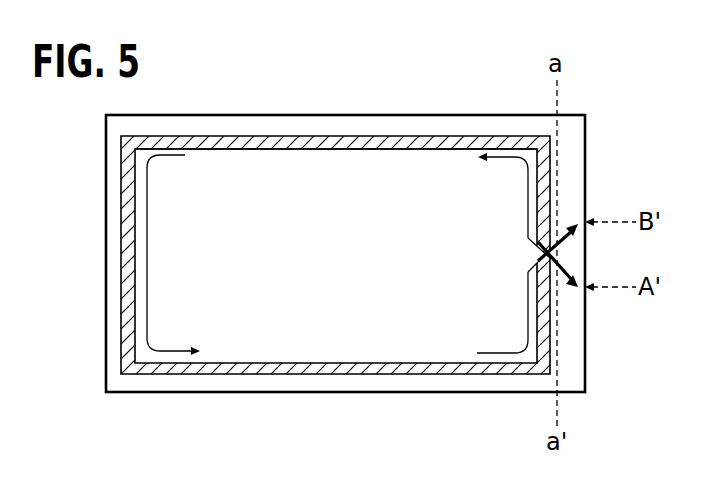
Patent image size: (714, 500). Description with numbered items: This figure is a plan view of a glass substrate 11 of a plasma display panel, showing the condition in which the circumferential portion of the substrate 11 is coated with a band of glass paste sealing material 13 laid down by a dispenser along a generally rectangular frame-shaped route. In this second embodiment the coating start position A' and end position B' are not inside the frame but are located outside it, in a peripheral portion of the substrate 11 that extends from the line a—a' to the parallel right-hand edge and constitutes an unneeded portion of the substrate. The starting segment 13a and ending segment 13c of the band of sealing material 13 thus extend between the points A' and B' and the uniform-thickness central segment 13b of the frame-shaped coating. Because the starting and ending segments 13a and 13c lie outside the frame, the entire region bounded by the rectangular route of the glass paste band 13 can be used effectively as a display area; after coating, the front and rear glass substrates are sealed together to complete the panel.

The glass substrate 11 is at (405, 115).
The glass paste sealing material 13 is at (308, 375).
The starting segment 13a is at (567, 284).
The central segment 13b is at (419, 150).
The ending segment 13c is at (574, 238).